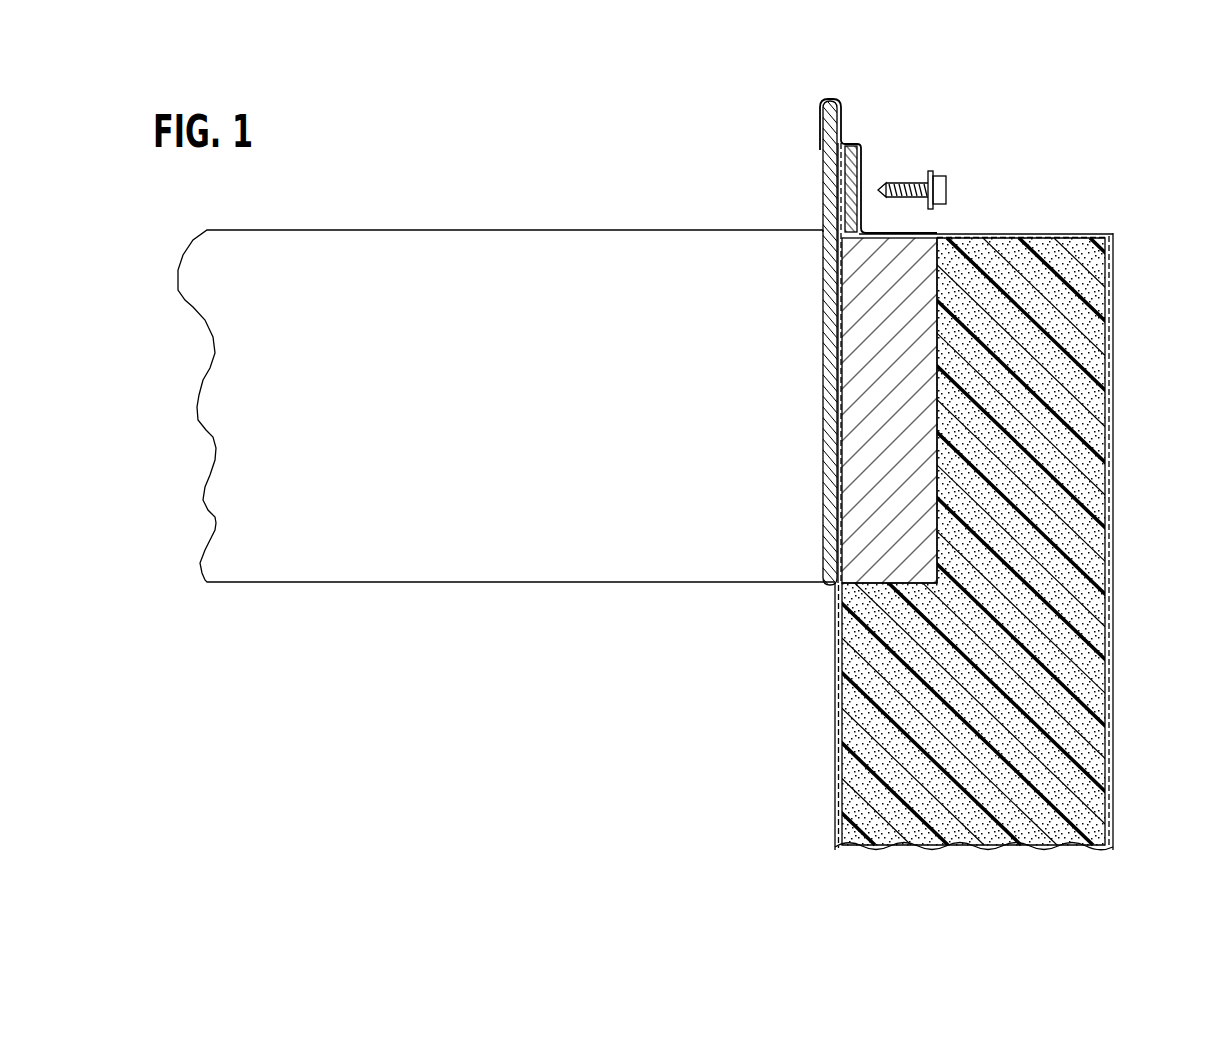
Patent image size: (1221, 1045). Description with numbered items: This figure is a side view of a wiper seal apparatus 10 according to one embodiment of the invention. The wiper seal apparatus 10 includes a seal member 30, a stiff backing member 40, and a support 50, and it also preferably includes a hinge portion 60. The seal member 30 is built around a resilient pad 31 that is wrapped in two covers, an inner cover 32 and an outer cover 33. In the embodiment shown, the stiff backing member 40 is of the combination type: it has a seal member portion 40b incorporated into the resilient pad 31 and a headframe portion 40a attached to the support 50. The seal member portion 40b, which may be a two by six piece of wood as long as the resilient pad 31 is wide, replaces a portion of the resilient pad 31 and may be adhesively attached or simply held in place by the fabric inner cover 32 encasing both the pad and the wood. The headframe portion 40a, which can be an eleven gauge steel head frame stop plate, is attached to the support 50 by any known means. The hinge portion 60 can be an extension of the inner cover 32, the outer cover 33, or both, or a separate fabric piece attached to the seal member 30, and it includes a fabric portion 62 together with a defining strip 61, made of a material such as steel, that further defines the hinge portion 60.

The wiper seal apparatus 10 is at (759, 136).
The seal member 30 is at (714, 541).
The resilient pad 31 is at (1037, 650).
The inner cover 32 is at (1094, 568).
The outer cover 33 is at (1112, 533).
The stiff backing member 40 is at (837, 343).
The headframe portion 40a is at (829, 210).
The seal member portion 40b is at (855, 314).
The support 50 is at (519, 146).
The hinge portion 60 is at (883, 148).
The defining strip 61 is at (864, 170).
The fabric portion 62 is at (839, 100).